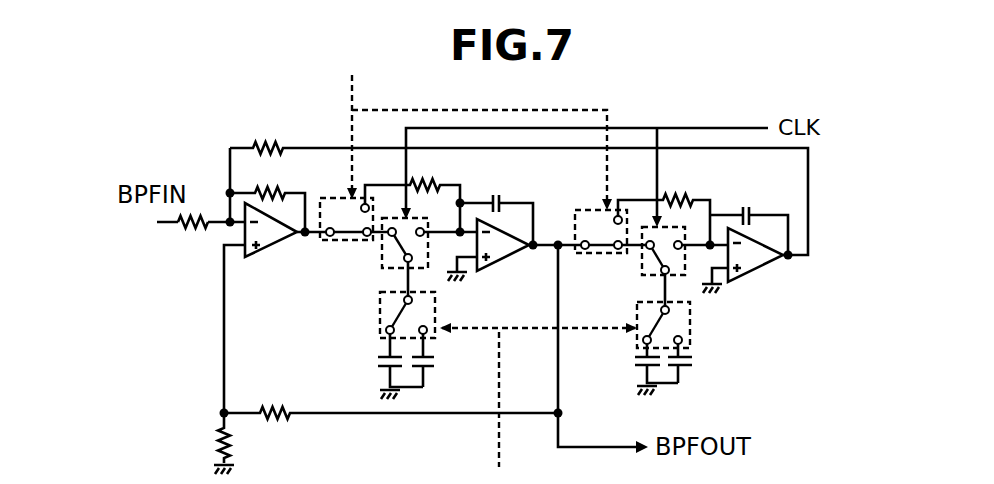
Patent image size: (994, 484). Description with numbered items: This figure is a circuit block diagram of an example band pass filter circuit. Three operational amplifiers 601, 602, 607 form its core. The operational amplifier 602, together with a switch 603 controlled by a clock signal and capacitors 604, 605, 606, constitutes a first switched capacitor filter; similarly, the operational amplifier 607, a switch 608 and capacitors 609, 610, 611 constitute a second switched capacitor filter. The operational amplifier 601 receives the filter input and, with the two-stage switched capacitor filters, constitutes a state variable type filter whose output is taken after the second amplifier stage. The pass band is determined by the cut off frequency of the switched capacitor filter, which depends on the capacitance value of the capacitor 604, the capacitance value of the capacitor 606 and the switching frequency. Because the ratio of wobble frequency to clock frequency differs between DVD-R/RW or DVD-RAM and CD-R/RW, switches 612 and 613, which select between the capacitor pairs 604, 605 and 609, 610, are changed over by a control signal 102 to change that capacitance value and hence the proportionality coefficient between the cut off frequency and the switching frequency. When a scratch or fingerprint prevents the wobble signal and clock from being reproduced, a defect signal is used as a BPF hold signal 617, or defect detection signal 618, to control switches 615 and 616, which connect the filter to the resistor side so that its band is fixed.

The operational amplifier 601 is at (265, 256).
The operational amplifier 602 is at (512, 255).
The switch 603 is at (380, 258).
The capacitor 604 is at (378, 366).
The capacitor 605 is at (435, 368).
The capacitor 606 is at (497, 195).
The operational amplifier 607 is at (765, 268).
The switch 608 is at (641, 275).
The capacitor 609 is at (634, 366).
The capacitor 610 is at (693, 360).
The capacitor 611 is at (745, 206).
The switch 612 is at (380, 320).
The switch 613 is at (693, 320).
The switch 615 is at (344, 196).
The switch 616 is at (602, 207).
The BPF hold signal 617 is at (409, 204).
The defect detection signal 618 is at (352, 100).
The control signal 102 is at (499, 440).